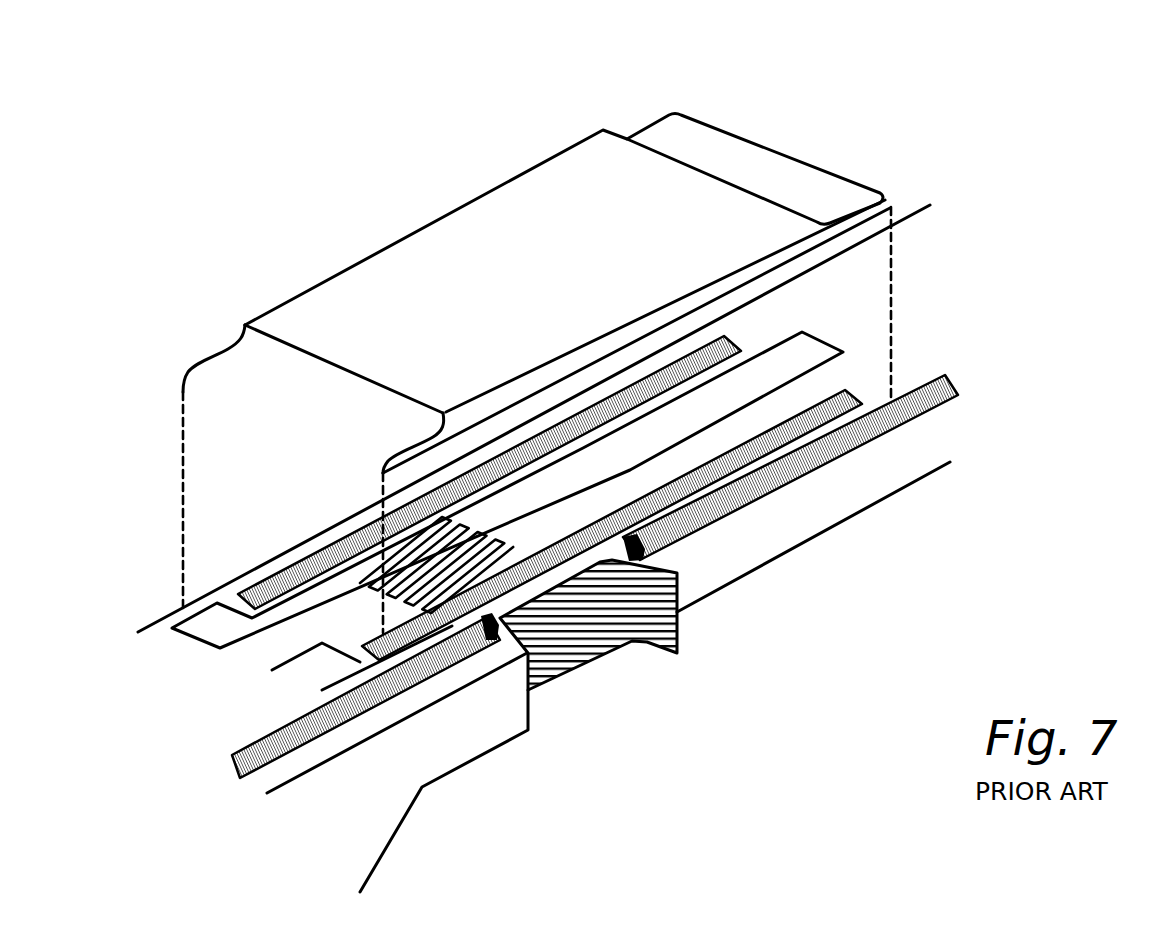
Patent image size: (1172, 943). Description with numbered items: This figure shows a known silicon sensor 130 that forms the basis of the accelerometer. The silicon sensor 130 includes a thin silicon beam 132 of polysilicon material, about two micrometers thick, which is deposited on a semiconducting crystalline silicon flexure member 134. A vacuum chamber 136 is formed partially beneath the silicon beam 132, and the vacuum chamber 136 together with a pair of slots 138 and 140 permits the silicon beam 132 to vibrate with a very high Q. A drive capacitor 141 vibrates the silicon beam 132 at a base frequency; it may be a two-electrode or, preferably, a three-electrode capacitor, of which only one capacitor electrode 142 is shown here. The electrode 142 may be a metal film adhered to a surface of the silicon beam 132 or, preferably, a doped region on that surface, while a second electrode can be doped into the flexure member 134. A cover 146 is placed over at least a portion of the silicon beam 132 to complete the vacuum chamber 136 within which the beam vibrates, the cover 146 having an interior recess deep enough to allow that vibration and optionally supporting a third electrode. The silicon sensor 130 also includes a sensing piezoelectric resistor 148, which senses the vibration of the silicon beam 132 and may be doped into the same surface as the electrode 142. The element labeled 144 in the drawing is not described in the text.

The silicon sensor 130 is at (800, 114).
The silicon beam 132 is at (693, 487).
The flexure member 134 is at (817, 507).
The vacuum chamber 136 is at (547, 583).
The slot 138 is at (262, 584).
The slot 140 is at (462, 655).
The drive capacitor 141 is at (914, 190).
The capacitor electrode 142 is at (820, 347).
The substrate plate 144 is at (893, 493).
The cover 146 is at (372, 282).
The sensing piezoelectric resistor 148 is at (497, 538).